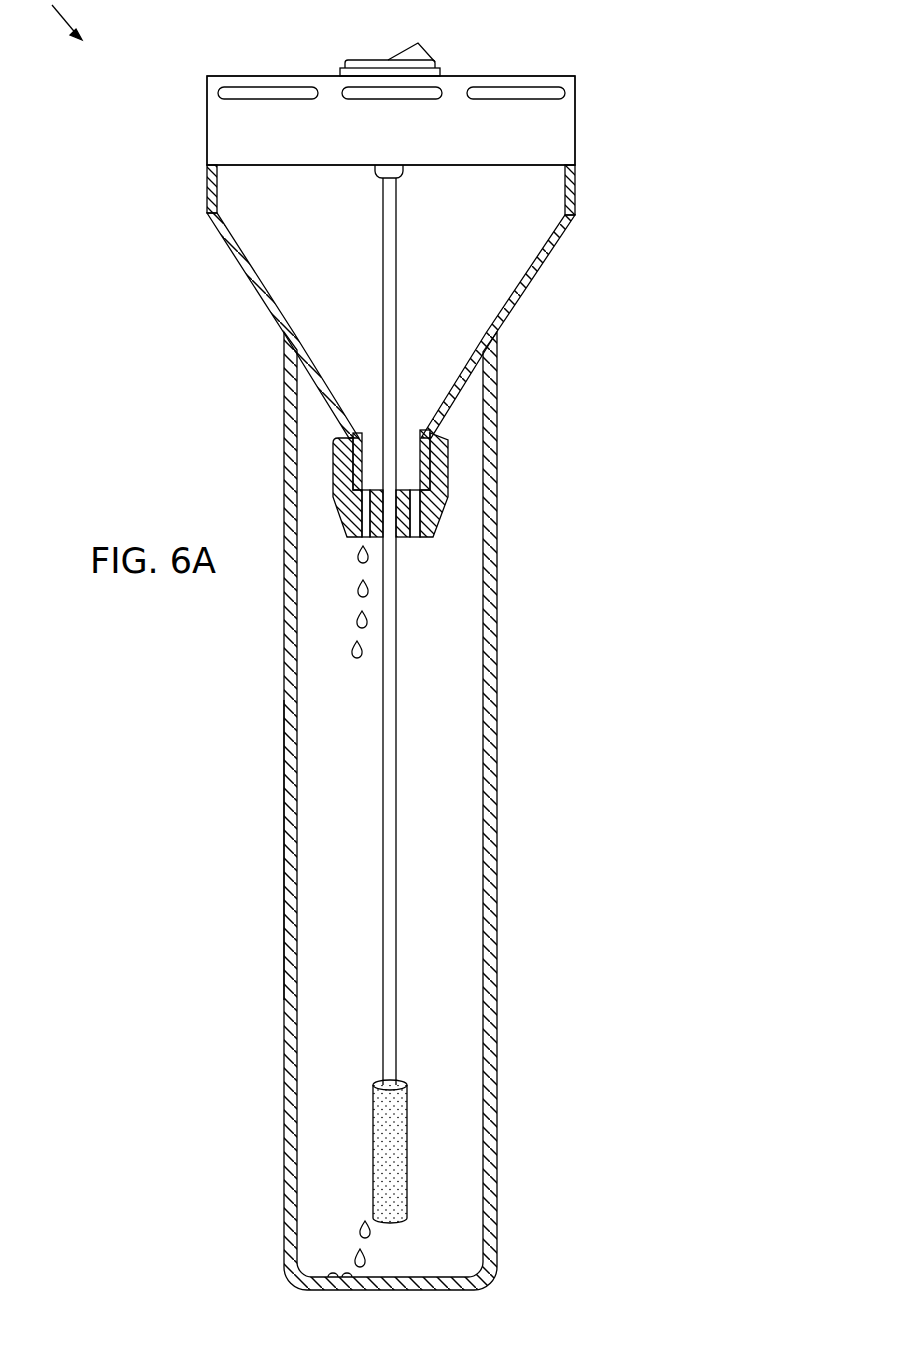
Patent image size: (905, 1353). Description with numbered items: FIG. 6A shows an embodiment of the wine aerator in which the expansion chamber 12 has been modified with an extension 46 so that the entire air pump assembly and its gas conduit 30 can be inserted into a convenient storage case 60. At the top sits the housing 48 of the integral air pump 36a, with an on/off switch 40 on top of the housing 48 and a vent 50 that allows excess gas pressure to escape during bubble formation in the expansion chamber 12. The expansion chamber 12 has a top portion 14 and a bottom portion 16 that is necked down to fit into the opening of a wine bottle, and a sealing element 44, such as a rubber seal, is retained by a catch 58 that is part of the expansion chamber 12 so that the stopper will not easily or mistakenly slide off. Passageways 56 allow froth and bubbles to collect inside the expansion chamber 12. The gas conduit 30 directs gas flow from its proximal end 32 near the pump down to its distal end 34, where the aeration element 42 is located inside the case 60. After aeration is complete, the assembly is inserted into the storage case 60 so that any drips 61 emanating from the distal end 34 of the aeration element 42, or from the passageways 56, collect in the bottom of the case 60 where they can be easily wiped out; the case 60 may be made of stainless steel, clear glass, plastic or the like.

The expansion chamber 12 is at (232, 257).
The top portion 14 is at (205, 193).
The bottom portion 16 is at (457, 383).
The gas conduit 30 is at (400, 832).
The proximal end 32 is at (392, 218).
The distal end 34 is at (392, 1082).
The air pump 36a is at (443, 113).
The on/off switch 40 is at (375, 60).
The aeration element 42 is at (393, 1185).
The sealing element 44 is at (447, 442).
The extension 46 is at (283, 410).
The housing 48 is at (575, 143).
The vent 50 is at (553, 95).
The passageways 56 is at (420, 538).
The catch 58 is at (447, 498).
The storage case 60 is at (283, 843).
The drips 61 is at (353, 618).